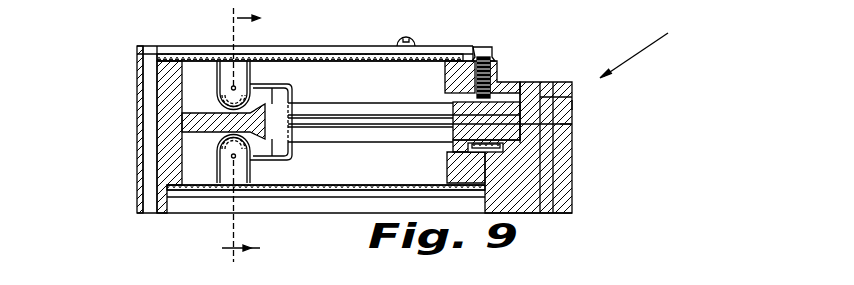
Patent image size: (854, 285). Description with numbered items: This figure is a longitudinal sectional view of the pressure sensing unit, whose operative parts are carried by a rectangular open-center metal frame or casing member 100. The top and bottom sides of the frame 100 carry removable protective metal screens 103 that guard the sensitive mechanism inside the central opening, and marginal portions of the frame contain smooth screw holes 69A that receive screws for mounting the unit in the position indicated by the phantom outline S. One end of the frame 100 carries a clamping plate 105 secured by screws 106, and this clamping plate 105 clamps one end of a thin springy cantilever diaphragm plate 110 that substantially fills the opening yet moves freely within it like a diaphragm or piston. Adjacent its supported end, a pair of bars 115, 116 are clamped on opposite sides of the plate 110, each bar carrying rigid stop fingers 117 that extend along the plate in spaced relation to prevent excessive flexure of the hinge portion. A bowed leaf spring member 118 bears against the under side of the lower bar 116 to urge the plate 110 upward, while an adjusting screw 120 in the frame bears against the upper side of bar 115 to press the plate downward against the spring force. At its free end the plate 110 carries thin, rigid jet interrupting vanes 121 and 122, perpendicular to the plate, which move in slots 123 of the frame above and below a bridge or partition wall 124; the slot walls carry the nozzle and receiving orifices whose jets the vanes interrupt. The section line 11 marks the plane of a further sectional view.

The smooth screw hole 69A is at (152, 192).
The frame or casing member 100 is at (570, 168).
The protective metal screen 103 is at (270, 57).
The clamping plate 105 is at (572, 104).
The screw 106 is at (572, 113).
The cantilever diaphragm 110 is at (387, 118).
The bar 115 is at (503, 103).
The bar 116 is at (547, 185).
The rigid stop finger 117 is at (337, 110).
The bowed leaf spring member 118 is at (490, 150).
The adjusting screw 120 is at (483, 48).
The jet interrupting vane 121 is at (218, 98).
The jet interrupting vane 122 is at (217, 140).
The slot 123 is at (200, 65).
The bridge or partition wall 124 is at (215, 107).
The section line 11 is at (239, 136).
The phantom outline S is at (641, 51).